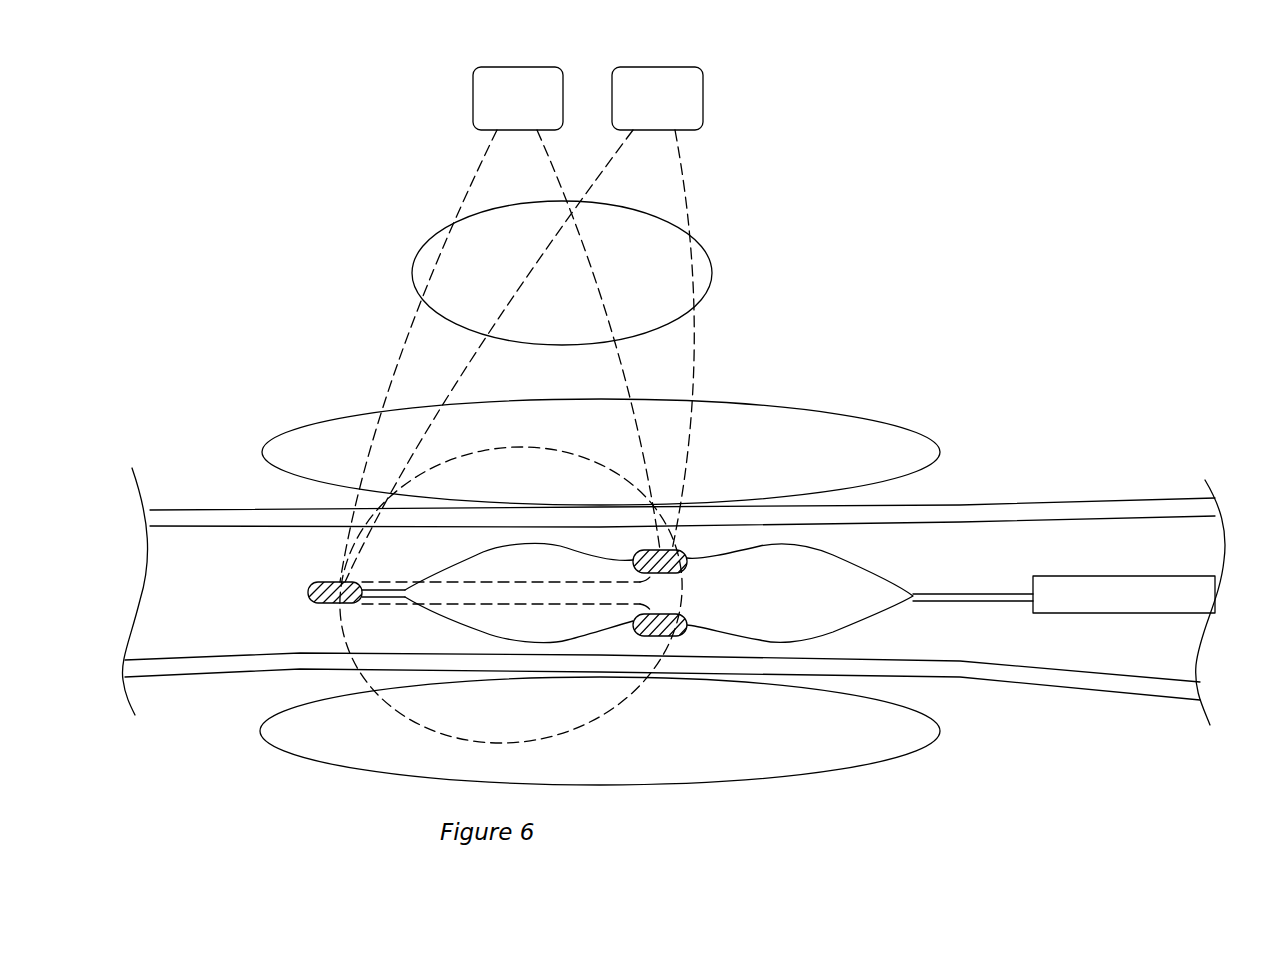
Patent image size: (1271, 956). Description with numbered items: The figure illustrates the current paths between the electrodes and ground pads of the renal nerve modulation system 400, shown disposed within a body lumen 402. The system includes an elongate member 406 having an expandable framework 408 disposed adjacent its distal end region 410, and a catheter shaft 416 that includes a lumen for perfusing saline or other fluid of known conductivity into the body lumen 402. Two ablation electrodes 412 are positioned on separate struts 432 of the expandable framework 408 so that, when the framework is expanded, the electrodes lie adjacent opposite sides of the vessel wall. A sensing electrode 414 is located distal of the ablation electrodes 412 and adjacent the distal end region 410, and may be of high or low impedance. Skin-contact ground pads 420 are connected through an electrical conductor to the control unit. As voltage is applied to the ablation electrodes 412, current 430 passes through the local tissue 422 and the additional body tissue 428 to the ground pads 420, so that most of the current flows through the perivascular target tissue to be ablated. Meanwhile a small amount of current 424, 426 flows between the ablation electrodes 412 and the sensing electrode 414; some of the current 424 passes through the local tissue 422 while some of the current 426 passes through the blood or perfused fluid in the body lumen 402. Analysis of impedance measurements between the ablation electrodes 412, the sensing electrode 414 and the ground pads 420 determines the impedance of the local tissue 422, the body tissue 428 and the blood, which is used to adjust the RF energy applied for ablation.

The renal nerve modulation system 400 is at (998, 213).
The body lumen 402 is at (217, 545).
The elongate member 406 is at (978, 593).
The expandable framework 408 is at (797, 543).
The distal end region 410 is at (375, 597).
The ablation electrodes 412 is at (683, 556).
The sensing electrode 414 is at (308, 587).
The catheter shaft 416 is at (1100, 587).
The skin-contact ground pads 420 is at (478, 103).
The local tissue 422 is at (905, 447).
The current through local tissue 424 is at (412, 712).
The current through lumen fluid 426 is at (400, 583).
The body tissue 428 is at (708, 275).
The current 430 is at (728, 207).
The struts 432 is at (527, 541).